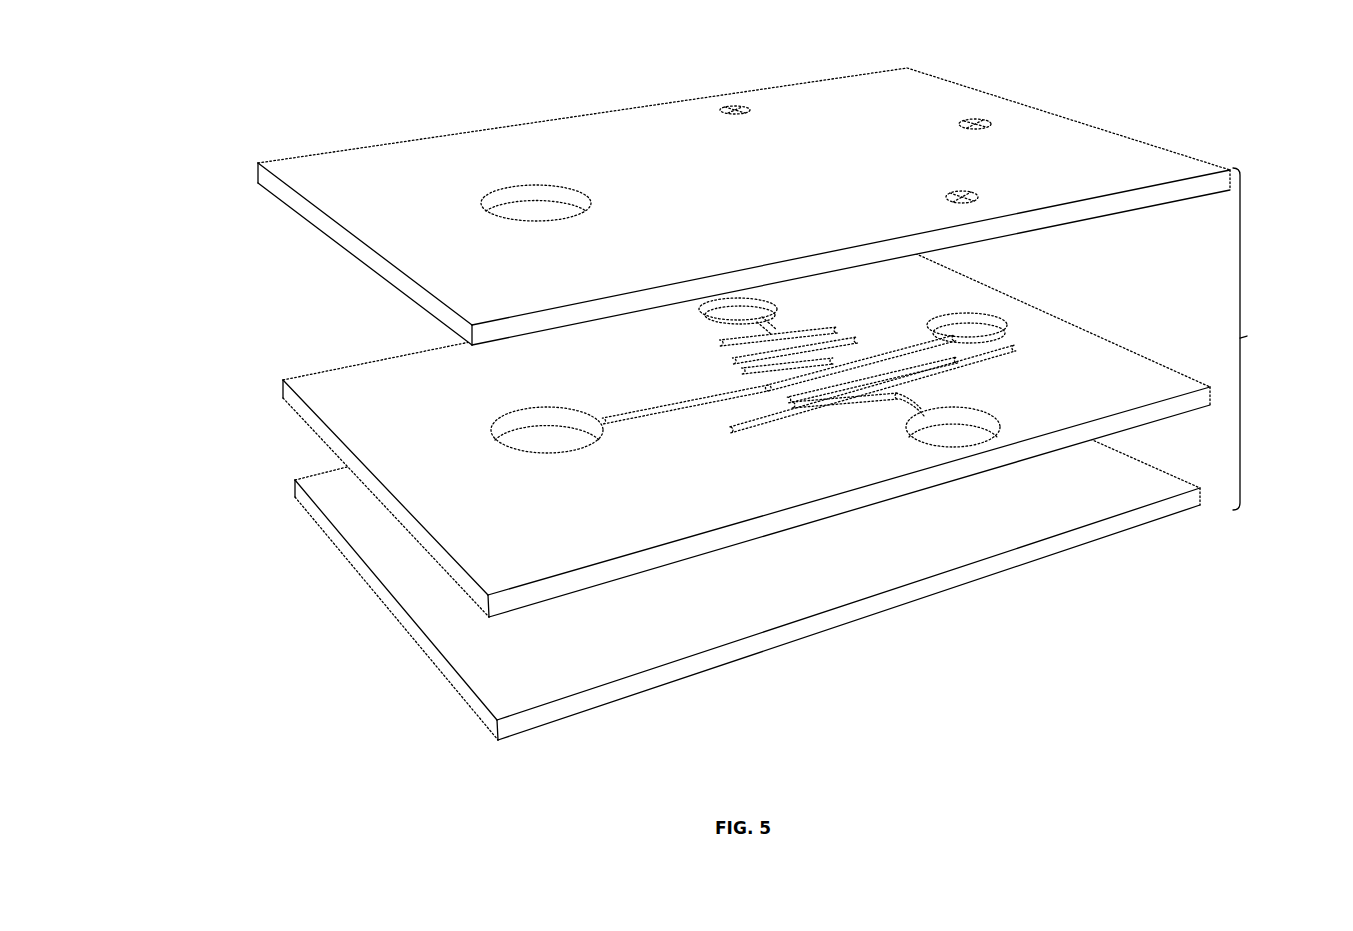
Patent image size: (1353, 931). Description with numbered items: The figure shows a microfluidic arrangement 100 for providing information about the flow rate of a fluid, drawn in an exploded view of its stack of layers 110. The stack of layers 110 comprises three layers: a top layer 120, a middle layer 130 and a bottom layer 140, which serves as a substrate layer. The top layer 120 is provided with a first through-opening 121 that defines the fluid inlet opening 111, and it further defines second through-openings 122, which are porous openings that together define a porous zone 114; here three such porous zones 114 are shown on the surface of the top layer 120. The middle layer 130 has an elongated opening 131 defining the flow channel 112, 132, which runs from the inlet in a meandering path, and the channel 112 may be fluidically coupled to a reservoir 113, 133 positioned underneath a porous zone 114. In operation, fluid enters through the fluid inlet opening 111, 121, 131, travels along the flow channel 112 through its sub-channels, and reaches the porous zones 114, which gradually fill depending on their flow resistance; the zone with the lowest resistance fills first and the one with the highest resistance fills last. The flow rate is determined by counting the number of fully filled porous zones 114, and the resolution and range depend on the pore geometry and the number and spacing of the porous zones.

The arrangement 100 is at (727, 395).
The stack of layers 110 is at (751, 404).
The top layer 120 is at (258, 173).
The middle layer 130 is at (283, 386).
The bottom layer 140 is at (295, 489).
The fluid inlet opening 111 is at (474, 259).
The first through-opening 121 is at (507, 203).
The elongated opening 131 is at (528, 423).
The flow channel 112 is at (790, 375).
The flow channel 132 is at (893, 348).
The reservoir 113 is at (946, 365).
The channel reservoir 133 is at (750, 297).
The porous zone 114 is at (775, 138).
The second through-opening 122 is at (945, 196).